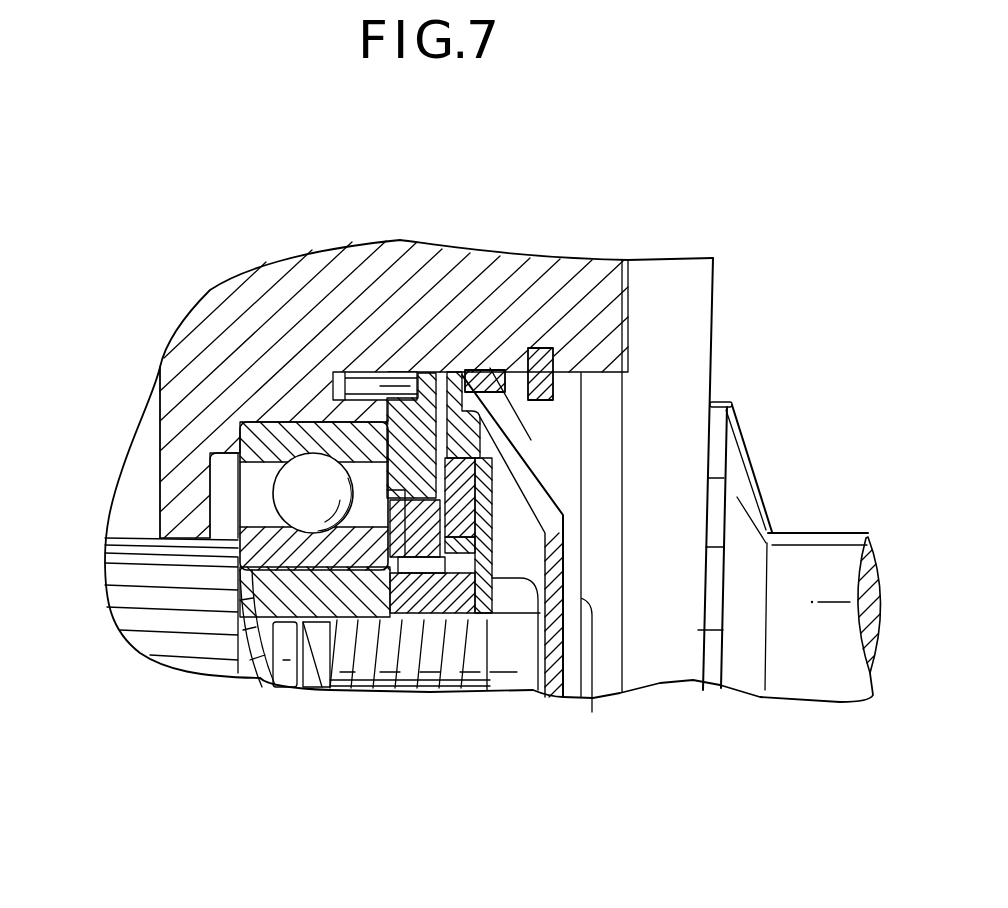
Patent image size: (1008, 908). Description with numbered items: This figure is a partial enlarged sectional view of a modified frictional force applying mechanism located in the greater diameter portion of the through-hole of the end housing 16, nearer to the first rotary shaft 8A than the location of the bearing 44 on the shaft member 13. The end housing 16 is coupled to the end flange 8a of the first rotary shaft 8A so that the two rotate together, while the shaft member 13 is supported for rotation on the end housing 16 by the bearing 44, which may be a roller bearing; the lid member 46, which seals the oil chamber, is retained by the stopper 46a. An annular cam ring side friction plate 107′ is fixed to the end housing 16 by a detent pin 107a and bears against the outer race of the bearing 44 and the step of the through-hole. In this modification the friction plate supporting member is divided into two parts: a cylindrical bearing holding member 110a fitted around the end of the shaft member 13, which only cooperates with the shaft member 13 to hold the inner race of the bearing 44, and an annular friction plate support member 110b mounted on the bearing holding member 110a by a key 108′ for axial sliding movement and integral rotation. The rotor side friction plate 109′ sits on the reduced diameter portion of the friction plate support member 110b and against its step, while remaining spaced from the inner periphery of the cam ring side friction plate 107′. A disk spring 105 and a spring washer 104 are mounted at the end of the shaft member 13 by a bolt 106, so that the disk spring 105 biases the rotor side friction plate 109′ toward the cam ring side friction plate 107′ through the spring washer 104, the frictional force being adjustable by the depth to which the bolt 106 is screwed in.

The end housing 16 is at (210, 303).
The shaft member 13 is at (130, 540).
The bearing 44 is at (292, 437).
The detent pin 107a is at (362, 377).
The cam ring side friction plate 107′ is at (405, 373).
The rotor side friction plate 109′ is at (433, 370).
The stopper 46a is at (543, 350).
The lid member 46 is at (572, 442).
The spring washer 104 is at (490, 487).
The friction plate support member 110b is at (540, 530).
The first rotary shaft 8A is at (833, 533).
The end flange 8a is at (723, 630).
The key 108′ is at (428, 672).
The bolt 106 is at (503, 678).
The disk spring 105 is at (588, 677).
The bearing holding member 110a is at (392, 672).